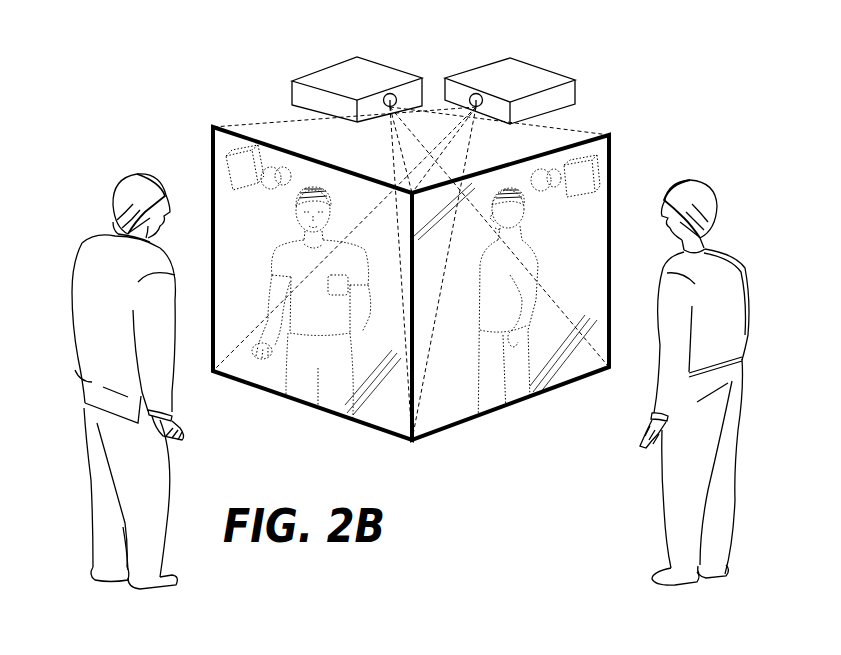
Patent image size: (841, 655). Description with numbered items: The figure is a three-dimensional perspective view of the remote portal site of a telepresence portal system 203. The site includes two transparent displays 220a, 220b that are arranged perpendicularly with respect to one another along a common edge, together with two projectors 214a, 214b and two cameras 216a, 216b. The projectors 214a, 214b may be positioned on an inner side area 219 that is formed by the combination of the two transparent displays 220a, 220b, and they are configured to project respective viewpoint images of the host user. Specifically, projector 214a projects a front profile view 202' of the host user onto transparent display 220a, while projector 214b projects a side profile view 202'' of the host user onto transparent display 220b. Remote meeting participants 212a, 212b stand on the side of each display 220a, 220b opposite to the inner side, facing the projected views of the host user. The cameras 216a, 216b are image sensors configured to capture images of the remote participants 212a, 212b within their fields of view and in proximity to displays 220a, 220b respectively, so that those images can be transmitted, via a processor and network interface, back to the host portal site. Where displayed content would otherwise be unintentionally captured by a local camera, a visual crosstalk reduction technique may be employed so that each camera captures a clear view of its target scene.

The telepresence display system 203 is at (308, 36).
The projector 214a is at (575, 92).
The projector 214b is at (292, 92).
The inner side area 219 is at (574, 133).
The camera 216a is at (570, 203).
The camera 216b is at (243, 189).
The front profile view 202' is at (298, 316).
The side profile view 202'' is at (487, 314).
The transparent display 220a is at (262, 393).
The transparent display 220b is at (455, 428).
The remote meeting participant 212a is at (80, 248).
The remote meeting participant 212b is at (748, 258).